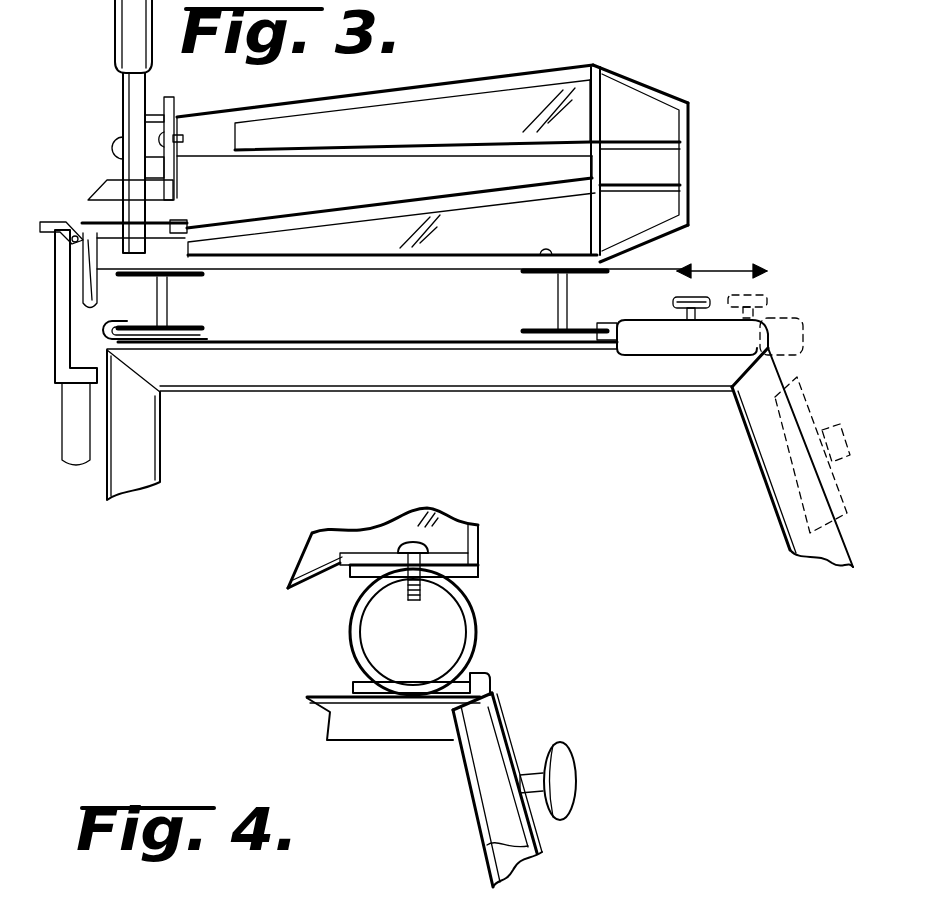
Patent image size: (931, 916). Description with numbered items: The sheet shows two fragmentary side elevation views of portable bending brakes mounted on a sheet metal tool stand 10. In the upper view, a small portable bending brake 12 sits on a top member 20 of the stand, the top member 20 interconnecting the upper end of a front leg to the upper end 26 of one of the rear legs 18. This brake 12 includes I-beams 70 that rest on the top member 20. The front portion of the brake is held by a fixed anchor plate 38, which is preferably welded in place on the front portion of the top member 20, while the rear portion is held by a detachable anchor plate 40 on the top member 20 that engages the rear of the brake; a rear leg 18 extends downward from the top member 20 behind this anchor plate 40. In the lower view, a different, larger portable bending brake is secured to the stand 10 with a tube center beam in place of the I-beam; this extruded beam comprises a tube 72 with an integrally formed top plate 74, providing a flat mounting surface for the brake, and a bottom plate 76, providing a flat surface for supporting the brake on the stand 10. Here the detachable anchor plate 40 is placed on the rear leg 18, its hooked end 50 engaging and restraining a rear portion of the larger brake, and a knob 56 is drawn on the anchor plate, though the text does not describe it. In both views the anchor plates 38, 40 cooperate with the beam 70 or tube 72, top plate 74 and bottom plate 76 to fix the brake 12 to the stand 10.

In FIG. 3, the sheet metal tool stand 10 is at (633, 387).
In FIG. 4, the sheet metal tool stand 10 is at (380, 737).
In FIG. 3, the portable bending brake 12 is at (653, 175).
In FIG. 4, the portable bending brake 12 is at (316, 549).
In FIG. 3, the rear legs 18 is at (780, 480).
In FIG. 3, the top members 20 is at (313, 367).
In FIG. 4, the upper end of rear leg 26 is at (453, 757).
In FIG. 3, the fixed anchor plates 38 is at (120, 304).
In FIG. 3, the detachable anchor plates 40 is at (710, 342).
In FIG. 4, the detachable anchor plates 40 is at (497, 827).
In FIG. 4, the hooked end 50 is at (480, 673).
In FIG. 4, the knob 56 is at (570, 780).
In FIG. 3, the I-beams 70 is at (570, 311).
In FIG. 4, the I-beams 70 is at (350, 617).
In FIG. 4, the tube 72 is at (474, 623).
In FIG. 3, the top plate 74 is at (540, 292).
In FIG. 4, the top plate 74 is at (470, 557).
In FIG. 3, the bottom plate 76 is at (543, 324).
In FIG. 4, the bottom plate 76 is at (367, 682).